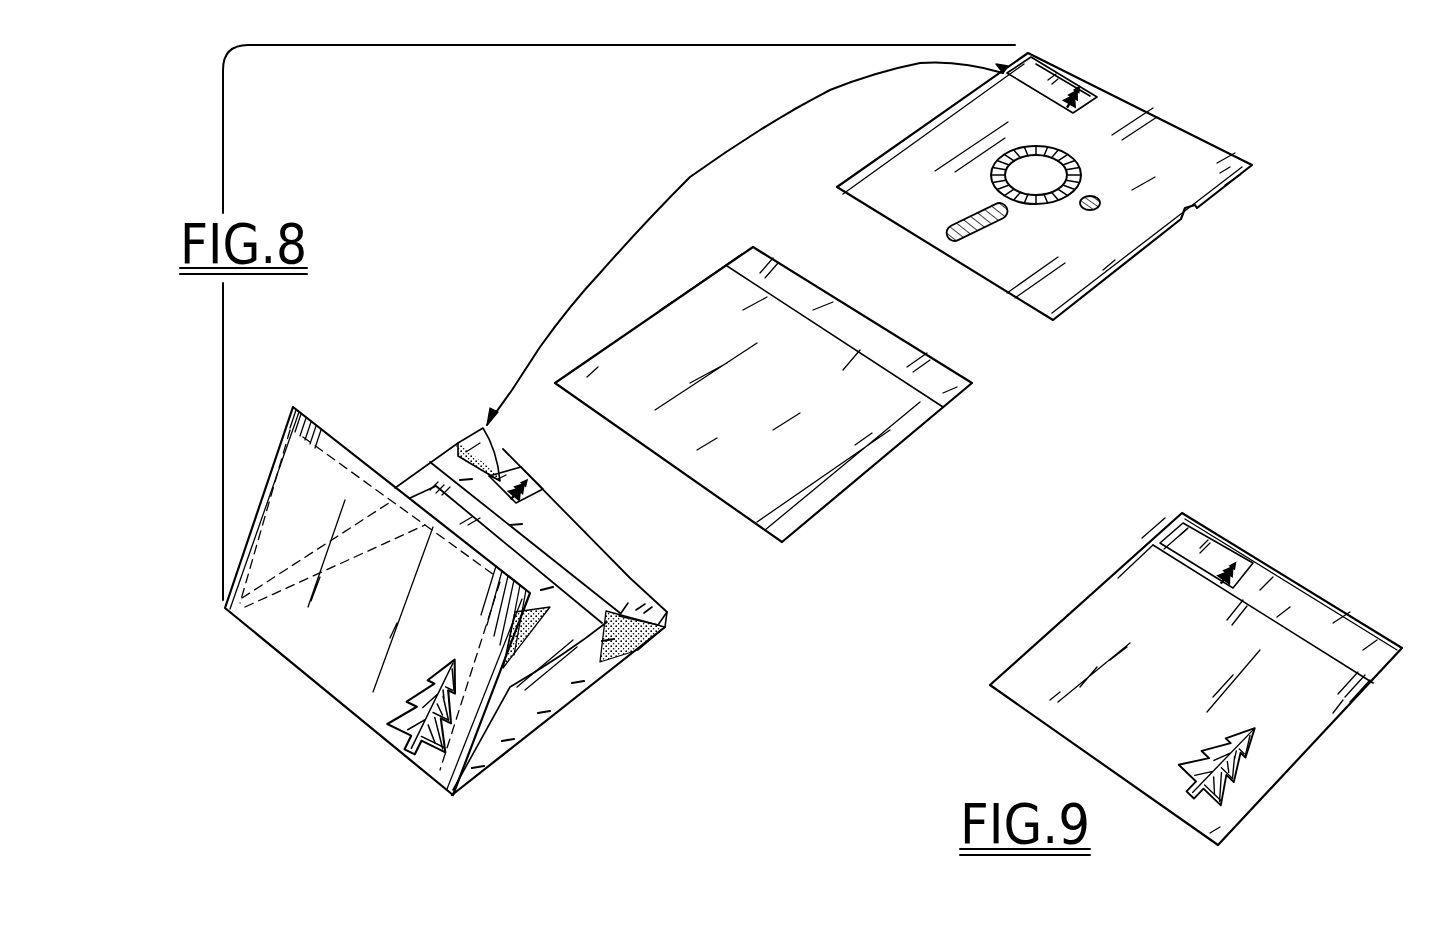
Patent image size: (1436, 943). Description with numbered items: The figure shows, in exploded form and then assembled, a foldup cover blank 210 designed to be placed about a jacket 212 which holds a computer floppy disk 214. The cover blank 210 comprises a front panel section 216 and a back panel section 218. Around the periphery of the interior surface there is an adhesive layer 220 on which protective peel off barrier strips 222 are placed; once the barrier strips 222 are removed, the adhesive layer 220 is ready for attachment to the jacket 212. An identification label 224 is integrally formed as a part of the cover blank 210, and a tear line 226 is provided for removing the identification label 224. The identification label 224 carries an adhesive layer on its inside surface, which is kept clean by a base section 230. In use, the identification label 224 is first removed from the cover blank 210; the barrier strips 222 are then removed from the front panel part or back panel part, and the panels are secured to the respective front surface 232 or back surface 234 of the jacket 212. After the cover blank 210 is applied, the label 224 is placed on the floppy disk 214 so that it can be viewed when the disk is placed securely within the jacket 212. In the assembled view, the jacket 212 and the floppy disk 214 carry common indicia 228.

In FIG. 8, the cover blank 210 is at (600, 688).
In FIG. 8, the jacket 212 is at (868, 483).
In FIG. 8, the floppy disk 214 is at (1175, 238).
In FIG. 8, the front panel section 216 is at (337, 673).
In FIG. 8, the back panel section 218 is at (567, 588).
In FIG. 8, the adhesive layer 220 is at (633, 653).
In FIG. 8, the protective peel off barrier strips 222 is at (637, 603).
In FIG. 8, the identification label 224 is at (493, 457).
In FIG. 8, the tear line 226 is at (521, 467).
In FIG. 8, the common indicia 228 is at (1078, 92).
In FIG. 9, the common indicia 228 is at (1237, 563).
In FIG. 8, the base section 230 is at (458, 450).
In FIG. 8, the front surface 232 is at (858, 441).
In FIG. 8, the back surface 234 is at (692, 326).